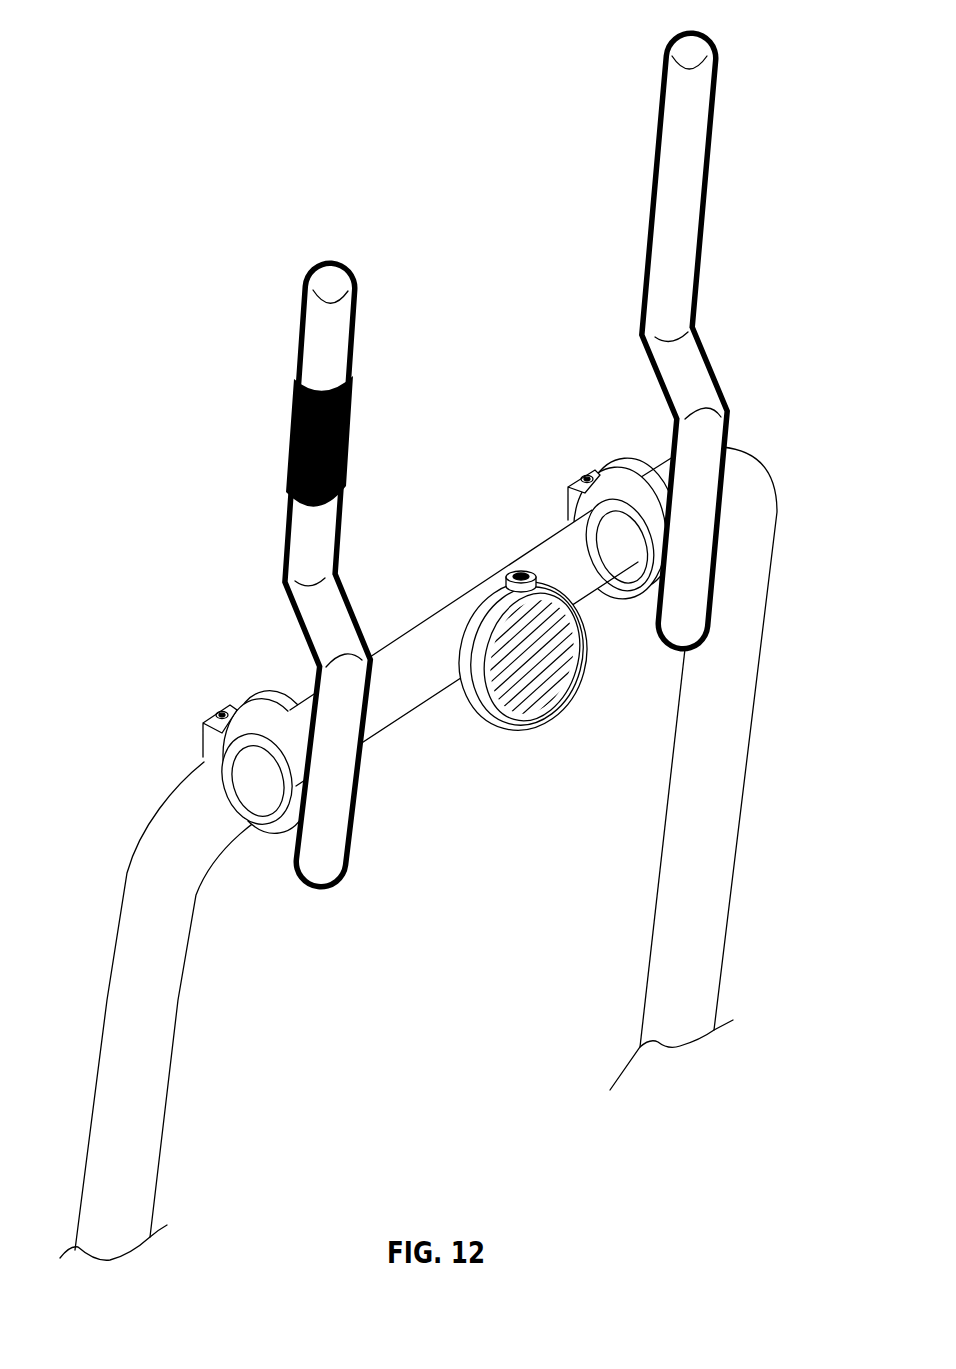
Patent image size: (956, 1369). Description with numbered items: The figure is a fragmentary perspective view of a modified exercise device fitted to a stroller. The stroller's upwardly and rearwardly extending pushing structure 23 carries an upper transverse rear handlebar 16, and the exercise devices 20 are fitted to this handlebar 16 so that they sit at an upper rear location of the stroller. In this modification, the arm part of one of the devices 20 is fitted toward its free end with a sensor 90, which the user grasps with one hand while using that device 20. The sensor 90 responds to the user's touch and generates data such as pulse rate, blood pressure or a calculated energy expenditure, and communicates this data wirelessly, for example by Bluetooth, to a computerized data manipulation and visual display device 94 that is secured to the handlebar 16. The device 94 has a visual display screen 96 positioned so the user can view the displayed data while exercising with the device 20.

The handlebar 16 is at (413, 657).
The exercise device 20 is at (267, 842).
The pushing structure 23 is at (710, 830).
The sensor 90 is at (350, 440).
The computerized data manipulation and visual display device 94 is at (519, 571).
The visual display screen 96 is at (503, 705).